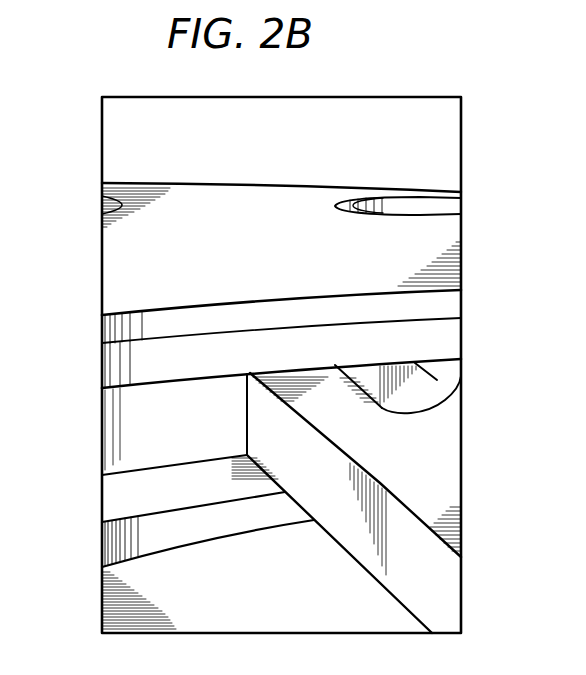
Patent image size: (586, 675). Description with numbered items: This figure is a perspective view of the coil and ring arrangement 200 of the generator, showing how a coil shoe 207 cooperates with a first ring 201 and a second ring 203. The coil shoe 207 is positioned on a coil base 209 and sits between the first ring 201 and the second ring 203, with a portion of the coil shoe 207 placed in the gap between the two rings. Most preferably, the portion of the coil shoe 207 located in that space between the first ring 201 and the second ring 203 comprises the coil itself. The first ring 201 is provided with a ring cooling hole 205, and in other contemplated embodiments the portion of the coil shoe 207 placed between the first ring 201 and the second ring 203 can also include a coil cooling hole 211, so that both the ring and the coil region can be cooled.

The optical structure 200 is at (407, 77).
The first ring 201 is at (112, 263).
The second ring 203 is at (112, 498).
The ring cooling hole 205 is at (433, 202).
The coil shoe 207 is at (447, 485).
The coil base 209 is at (112, 605).
The coil cooling hole 211 is at (452, 402).